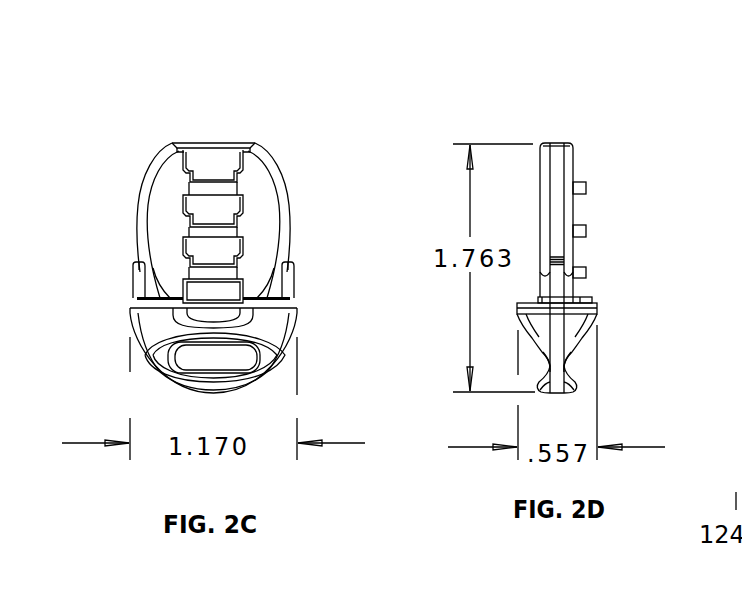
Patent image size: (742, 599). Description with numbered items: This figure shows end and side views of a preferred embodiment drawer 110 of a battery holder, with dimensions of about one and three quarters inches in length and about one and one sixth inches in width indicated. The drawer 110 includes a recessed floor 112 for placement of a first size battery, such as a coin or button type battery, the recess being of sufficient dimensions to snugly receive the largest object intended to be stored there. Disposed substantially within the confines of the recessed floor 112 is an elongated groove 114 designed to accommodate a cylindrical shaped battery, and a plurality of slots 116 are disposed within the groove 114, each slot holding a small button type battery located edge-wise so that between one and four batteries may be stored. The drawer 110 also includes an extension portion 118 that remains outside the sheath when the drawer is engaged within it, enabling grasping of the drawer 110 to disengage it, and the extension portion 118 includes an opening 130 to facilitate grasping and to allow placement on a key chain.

In FIG. 2C, the drawer 110 is at (265, 112).
In FIG. 2D, the drawer 110 is at (590, 110).
In FIG. 2C, the recessed floor 112 is at (258, 217).
In FIG. 2C, the elongated groove 114 is at (213, 188).
In FIG. 2D, the slots 116 is at (582, 208).
In FIG. 2C, the extension portion 118 is at (243, 379).
In FIG. 2C, the opening 130 is at (196, 354).